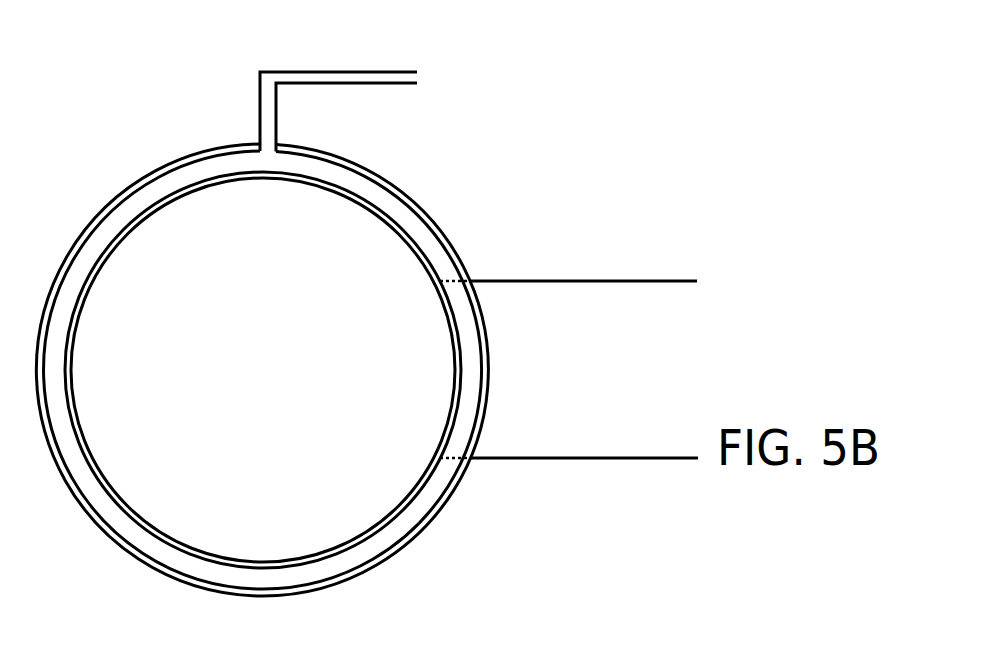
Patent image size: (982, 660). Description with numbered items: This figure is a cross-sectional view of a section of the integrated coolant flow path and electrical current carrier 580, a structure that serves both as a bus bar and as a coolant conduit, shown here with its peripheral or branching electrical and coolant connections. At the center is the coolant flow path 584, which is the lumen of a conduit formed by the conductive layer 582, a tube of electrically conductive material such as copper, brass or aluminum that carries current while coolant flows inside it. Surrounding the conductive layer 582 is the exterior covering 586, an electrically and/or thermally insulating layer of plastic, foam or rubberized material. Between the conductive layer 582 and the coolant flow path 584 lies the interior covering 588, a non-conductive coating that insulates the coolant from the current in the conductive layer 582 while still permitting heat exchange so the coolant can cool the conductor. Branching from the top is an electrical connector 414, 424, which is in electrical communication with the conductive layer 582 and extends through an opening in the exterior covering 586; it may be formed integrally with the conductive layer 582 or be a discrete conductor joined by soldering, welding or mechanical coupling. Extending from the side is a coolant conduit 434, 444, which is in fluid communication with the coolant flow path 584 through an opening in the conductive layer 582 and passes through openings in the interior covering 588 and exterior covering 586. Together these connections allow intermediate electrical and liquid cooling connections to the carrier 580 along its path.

The integrated coolant flow path and electrical current carrier 580 is at (535, 132).
The conductive layer 582 is at (198, 175).
The coolant flow path 584 is at (282, 550).
The exterior covering 586 is at (442, 512).
The interior covering 588 is at (430, 253).
The electrical connector 414 is at (361, 81).
The electrical connector 424 is at (295, 70).
The coolant conduit 434 is at (585, 340).
The coolant conduit 444 is at (563, 281).